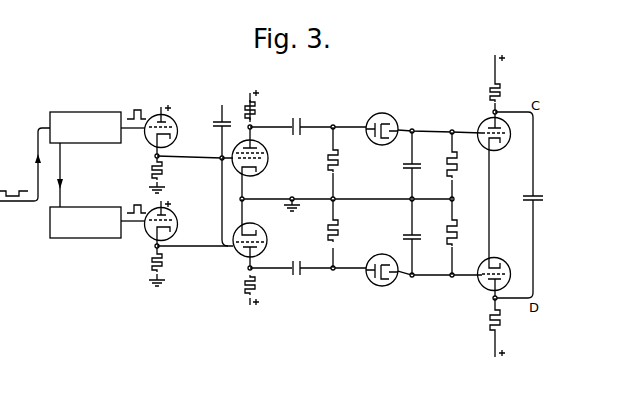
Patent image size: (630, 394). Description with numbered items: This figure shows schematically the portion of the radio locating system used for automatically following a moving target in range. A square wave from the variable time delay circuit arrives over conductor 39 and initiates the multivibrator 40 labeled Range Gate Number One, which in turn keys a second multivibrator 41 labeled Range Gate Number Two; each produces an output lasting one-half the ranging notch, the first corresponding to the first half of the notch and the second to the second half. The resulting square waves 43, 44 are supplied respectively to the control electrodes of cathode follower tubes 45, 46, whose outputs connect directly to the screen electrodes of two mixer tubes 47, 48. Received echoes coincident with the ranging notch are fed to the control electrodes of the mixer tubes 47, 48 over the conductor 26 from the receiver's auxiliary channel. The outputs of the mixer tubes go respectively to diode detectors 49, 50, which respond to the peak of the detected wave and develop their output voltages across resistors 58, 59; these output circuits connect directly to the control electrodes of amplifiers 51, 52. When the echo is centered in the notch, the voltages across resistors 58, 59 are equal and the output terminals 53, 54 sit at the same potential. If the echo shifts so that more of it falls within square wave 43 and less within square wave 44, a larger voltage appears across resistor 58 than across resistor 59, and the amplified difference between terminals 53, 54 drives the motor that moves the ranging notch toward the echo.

The conductor 26 is at (220, 114).
The conductor 39 is at (7, 203).
The multivibrator 40 is at (98, 144).
The multivibrator 41 is at (103, 238).
The square wave 43 is at (139, 105).
The square wave 44 is at (137, 199).
The cathode follower tube 45 is at (177, 135).
The cathode follower tube 46 is at (177, 222).
The mixer tube 47 is at (263, 145).
The mixer tube 48 is at (265, 232).
The diode detector 49 is at (382, 112).
The diode detector 50 is at (382, 286).
The amplifier 51 is at (479, 125).
The amplifier 52 is at (478, 283).
The output terminal 53 is at (492, 111).
The output terminal 54 is at (492, 298).
The resistor 58 is at (456, 164).
The resistor 59 is at (457, 232).